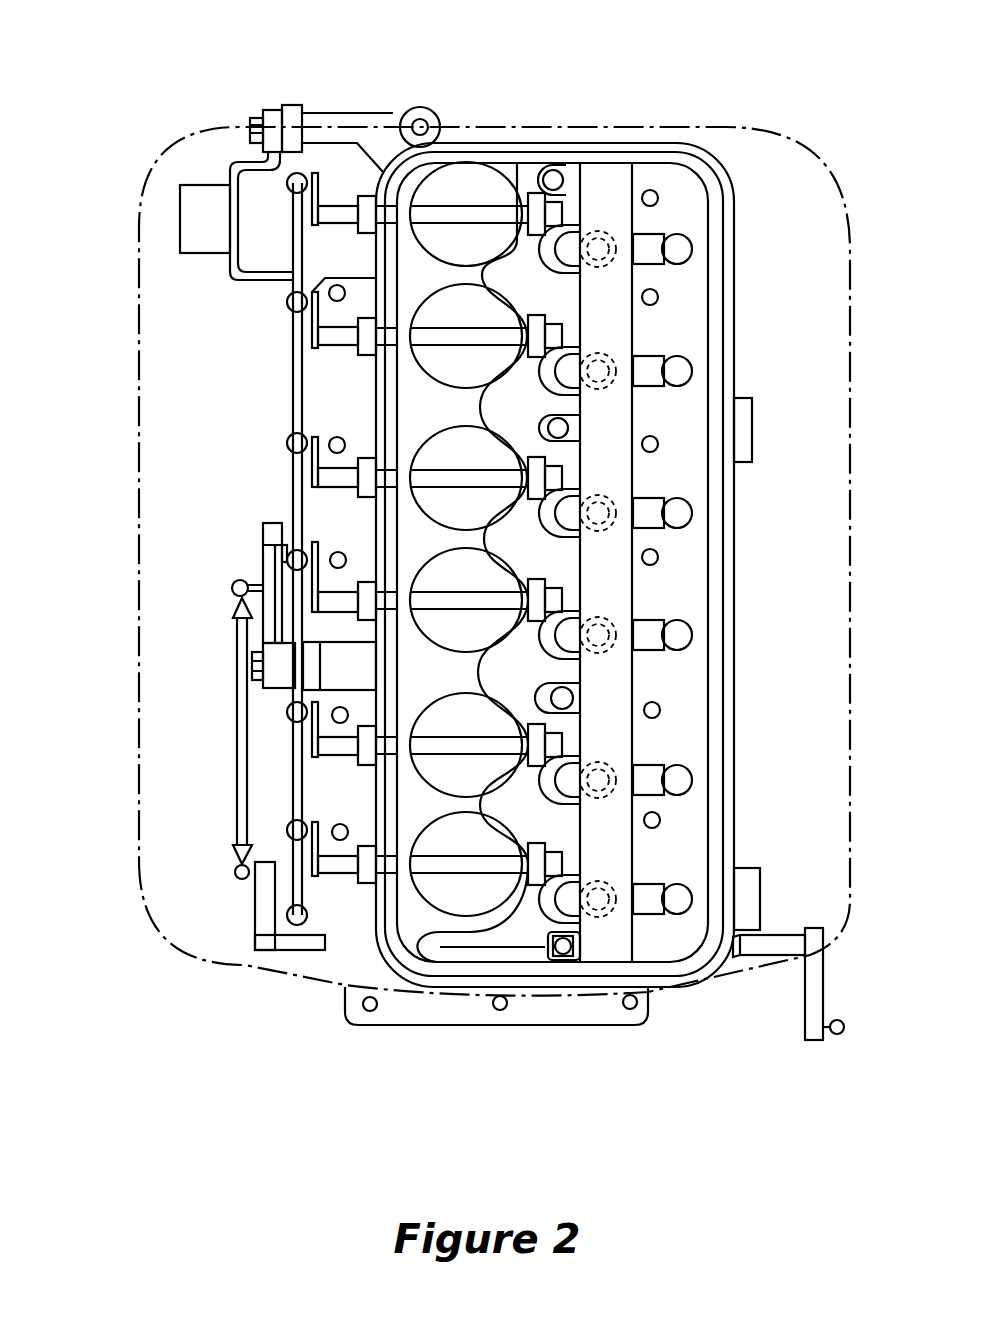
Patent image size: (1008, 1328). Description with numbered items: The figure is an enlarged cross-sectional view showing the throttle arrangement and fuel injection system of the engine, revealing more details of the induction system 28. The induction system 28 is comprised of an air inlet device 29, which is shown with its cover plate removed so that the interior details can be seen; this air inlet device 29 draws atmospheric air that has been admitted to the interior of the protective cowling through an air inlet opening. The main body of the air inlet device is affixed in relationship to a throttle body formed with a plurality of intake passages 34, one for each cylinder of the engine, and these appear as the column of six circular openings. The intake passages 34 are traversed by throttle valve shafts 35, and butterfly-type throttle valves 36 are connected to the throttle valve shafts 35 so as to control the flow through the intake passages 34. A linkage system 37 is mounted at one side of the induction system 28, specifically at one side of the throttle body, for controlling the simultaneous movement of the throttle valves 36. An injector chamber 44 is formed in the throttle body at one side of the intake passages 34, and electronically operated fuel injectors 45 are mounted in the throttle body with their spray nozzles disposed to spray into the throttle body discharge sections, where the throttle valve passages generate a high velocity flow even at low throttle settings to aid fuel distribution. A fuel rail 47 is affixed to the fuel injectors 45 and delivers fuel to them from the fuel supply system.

The induction system 28 is at (745, 221).
The air inlet device 29 is at (133, 468).
The intake passages 34 is at (454, 168).
The throttle valve shafts 35 is at (483, 205).
The throttle valves 36 is at (450, 185).
The linkage system 37 is at (229, 540).
The injector chamber 44 is at (662, 574).
The fuel injectors 45 is at (563, 225).
The fuel rail 47 is at (645, 313).